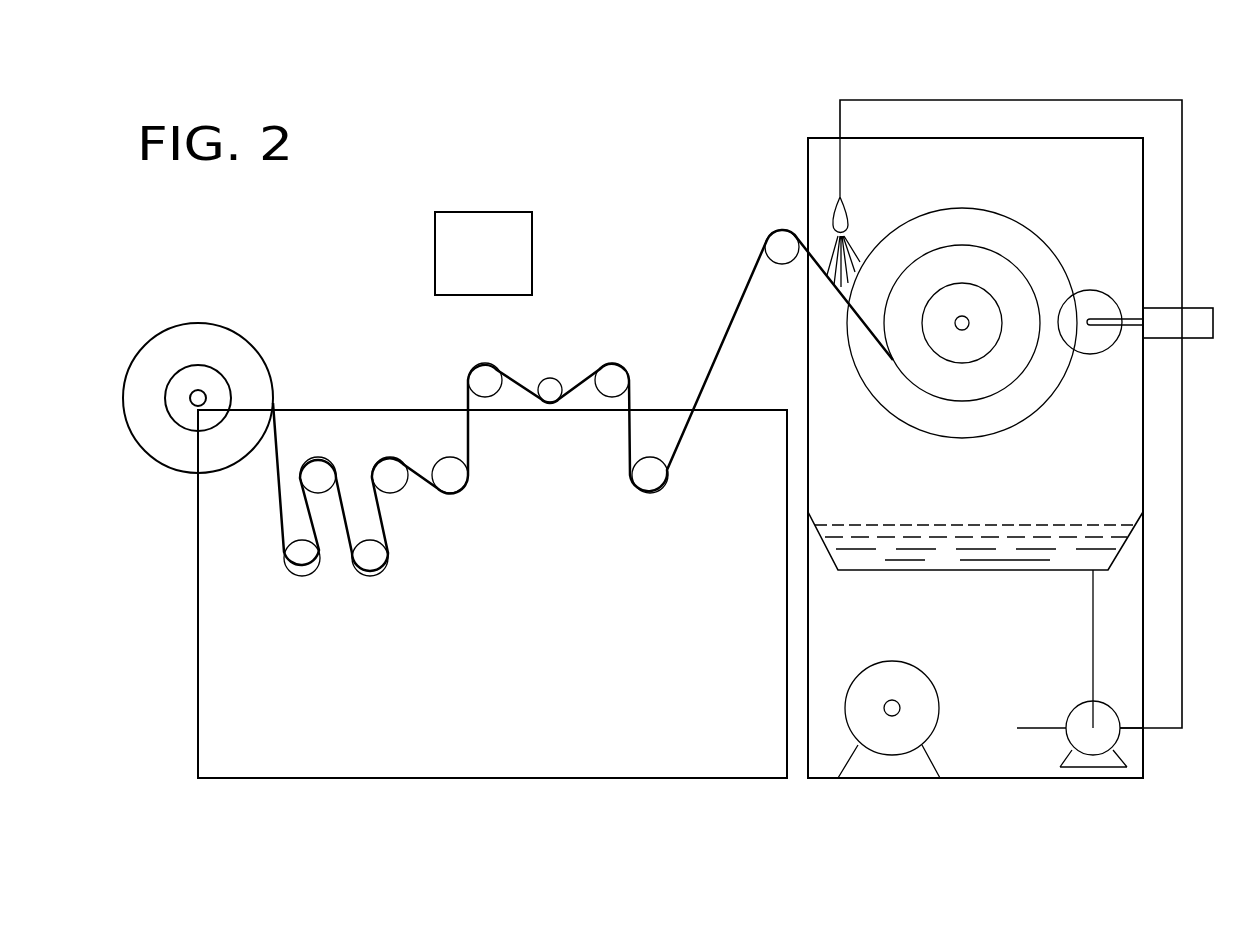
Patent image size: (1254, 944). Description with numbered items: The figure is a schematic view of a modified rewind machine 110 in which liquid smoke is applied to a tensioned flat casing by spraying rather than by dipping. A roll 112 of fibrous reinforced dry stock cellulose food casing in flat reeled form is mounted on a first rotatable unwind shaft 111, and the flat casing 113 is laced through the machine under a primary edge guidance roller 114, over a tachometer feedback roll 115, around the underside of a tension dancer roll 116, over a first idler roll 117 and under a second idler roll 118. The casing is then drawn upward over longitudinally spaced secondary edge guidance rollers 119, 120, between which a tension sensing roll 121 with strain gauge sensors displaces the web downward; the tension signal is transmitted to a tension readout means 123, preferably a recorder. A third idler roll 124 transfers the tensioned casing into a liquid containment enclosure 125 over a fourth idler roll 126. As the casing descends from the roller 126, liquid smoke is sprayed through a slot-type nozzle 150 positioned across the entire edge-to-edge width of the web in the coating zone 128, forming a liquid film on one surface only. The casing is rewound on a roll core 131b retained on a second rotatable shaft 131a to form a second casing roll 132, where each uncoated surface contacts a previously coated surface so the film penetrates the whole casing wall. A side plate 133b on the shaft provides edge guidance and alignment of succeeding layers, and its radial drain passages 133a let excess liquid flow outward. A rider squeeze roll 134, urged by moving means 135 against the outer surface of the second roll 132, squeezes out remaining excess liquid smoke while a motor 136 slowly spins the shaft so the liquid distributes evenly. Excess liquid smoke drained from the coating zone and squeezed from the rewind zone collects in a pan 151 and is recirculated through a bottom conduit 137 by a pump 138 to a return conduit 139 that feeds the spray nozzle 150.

The modified rewind machine 110 is at (508, 693).
The first rotatable unwind shaft 111 is at (190, 398).
The roll of flat stock casing 112 is at (257, 363).
The flat casing 113 is at (281, 439).
The primary edge guidance roller 114 is at (307, 568).
The tachometer feedback roll 115 is at (318, 463).
The tension dancer roll 116 is at (373, 567).
The first idler roll 117 is at (385, 465).
The second idler roll 118 is at (457, 483).
The secondary edge guidance roller 119 is at (482, 372).
The secondary edge guidance roller 120 is at (620, 370).
The tension sensing roll 121 is at (553, 387).
The tension readout means 123 is at (490, 218).
The third idler roll 124 is at (650, 483).
The liquid containment enclosure 125 is at (1058, 138).
The fourth idler roll 126 is at (772, 243).
The liquid smoke coating zone 128 is at (855, 245).
The second rotatable shaft 131a is at (960, 330).
The roll core 131b is at (993, 358).
The second casing roll 132 is at (960, 255).
The radial drain passages 133a is at (1003, 215).
The side plate 133b is at (1050, 248).
The rider squeeze roll 134 is at (1092, 298).
The moving means 135 is at (1190, 307).
The motor 136 is at (928, 683).
The bottom conduit 137 is at (1092, 645).
The pump 138 is at (1077, 720).
The return conduit 139 is at (1178, 448).
The slot-type nozzle 150 is at (836, 222).
The pan 151 is at (935, 570).